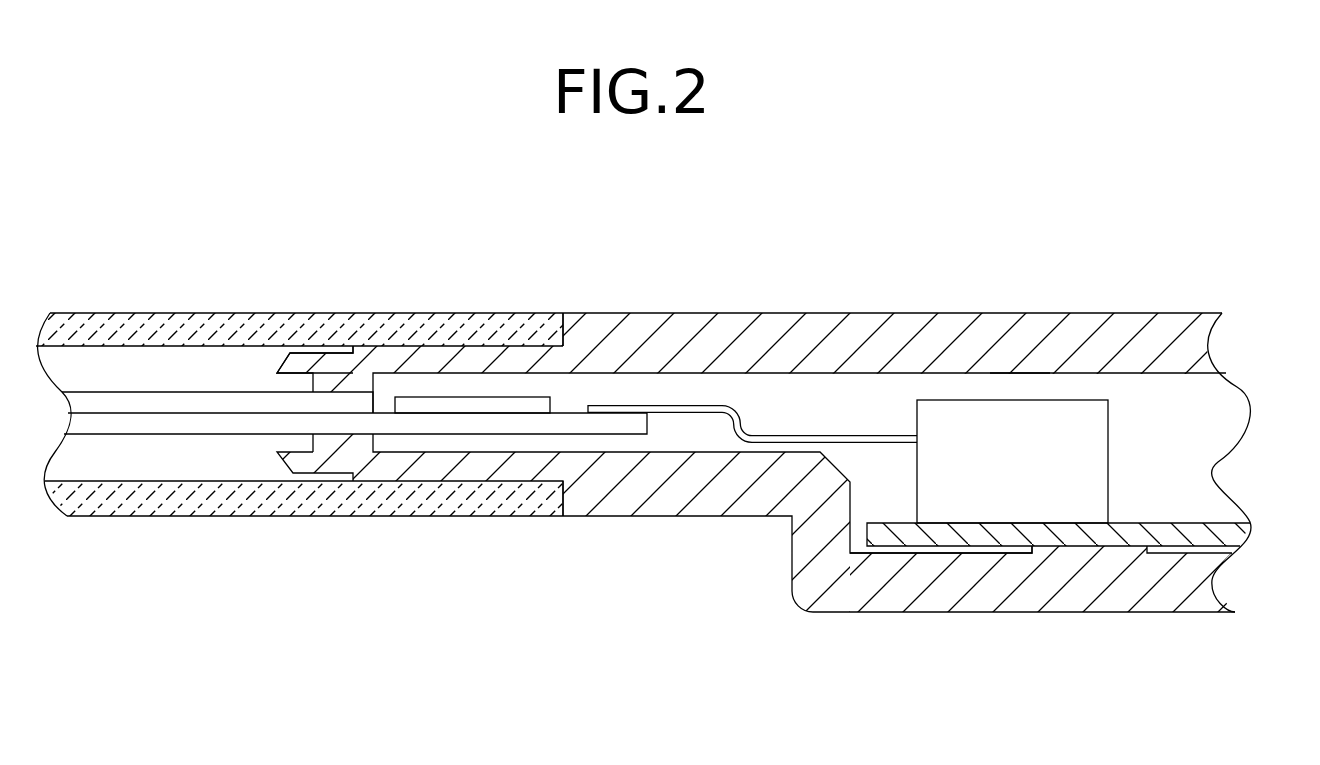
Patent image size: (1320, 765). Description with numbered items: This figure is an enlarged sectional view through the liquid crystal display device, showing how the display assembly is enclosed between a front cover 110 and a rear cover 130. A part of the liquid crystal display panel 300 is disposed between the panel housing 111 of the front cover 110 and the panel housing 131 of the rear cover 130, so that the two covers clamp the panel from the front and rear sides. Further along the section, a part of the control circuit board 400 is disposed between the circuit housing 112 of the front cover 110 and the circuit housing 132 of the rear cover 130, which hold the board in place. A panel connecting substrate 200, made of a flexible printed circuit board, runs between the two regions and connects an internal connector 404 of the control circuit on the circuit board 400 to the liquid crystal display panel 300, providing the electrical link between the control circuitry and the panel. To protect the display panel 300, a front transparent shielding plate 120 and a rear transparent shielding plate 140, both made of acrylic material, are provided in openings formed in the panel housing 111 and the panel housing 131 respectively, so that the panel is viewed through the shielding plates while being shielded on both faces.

The front cover 110 is at (1192, 330).
The panel housing 111 is at (336, 368).
The circuit housing 112 is at (1003, 373).
The front transparent shielding plate 120 is at (410, 313).
The rear cover 130 is at (1163, 597).
The panel housing 131 is at (327, 440).
The circuit housing 132 is at (990, 546).
The rear transparent shielding plate 140 is at (399, 513).
The panel connecting substrate 200 is at (680, 410).
The liquid crystal display panel 300 is at (255, 388).
The control circuit board 400 is at (1229, 521).
The internal connector 404 is at (957, 430).